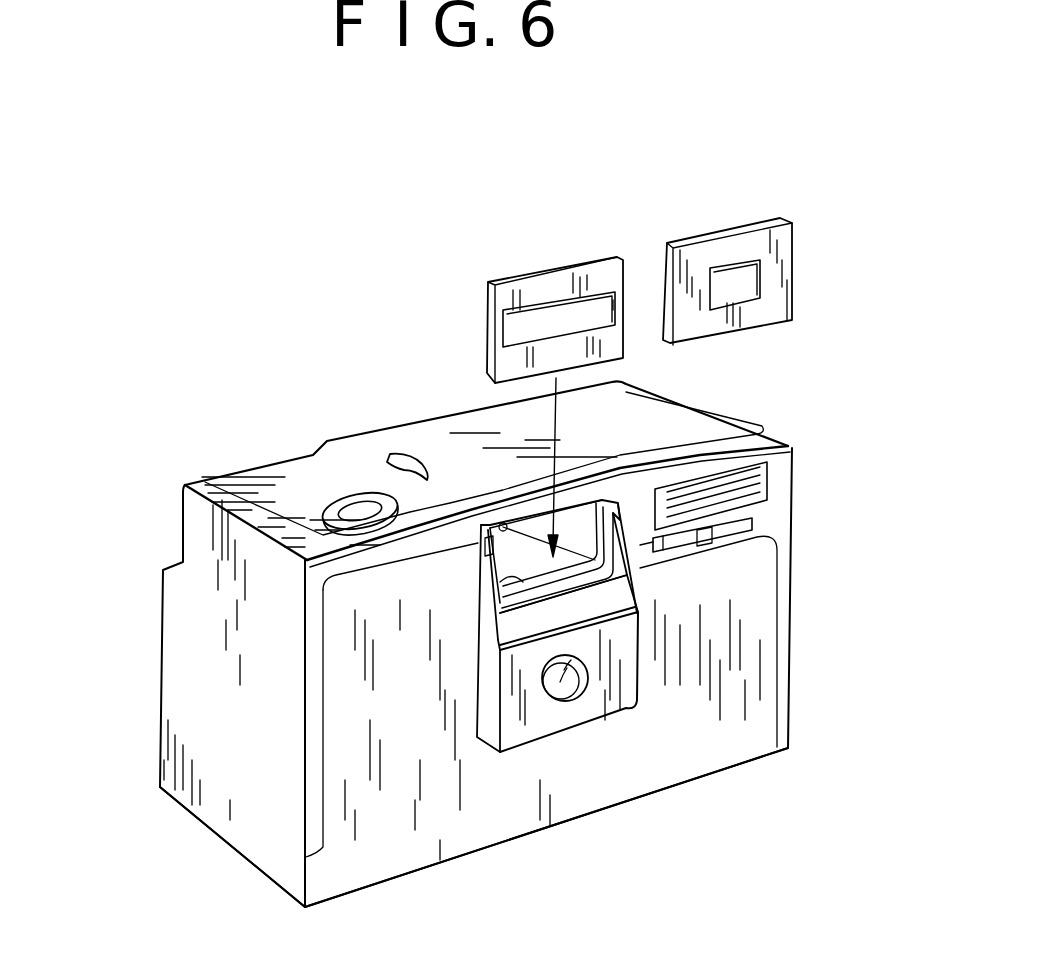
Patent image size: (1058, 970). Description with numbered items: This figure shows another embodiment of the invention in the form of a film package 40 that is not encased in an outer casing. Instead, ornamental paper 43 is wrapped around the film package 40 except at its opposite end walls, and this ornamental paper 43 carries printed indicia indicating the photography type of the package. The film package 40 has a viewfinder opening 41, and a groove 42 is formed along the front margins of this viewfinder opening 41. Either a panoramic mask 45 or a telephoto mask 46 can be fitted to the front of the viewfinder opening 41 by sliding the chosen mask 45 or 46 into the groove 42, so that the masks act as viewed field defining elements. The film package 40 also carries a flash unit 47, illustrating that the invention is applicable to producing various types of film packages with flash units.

The film package 40 is at (180, 661).
The viewfinder opening 41 is at (503, 523).
The groove 42 is at (470, 525).
The ornamental paper 43 is at (323, 848).
The panoramic mask 45 is at (552, 270).
The telephoto mask 46 is at (728, 227).
The flash unit 47 is at (772, 480).